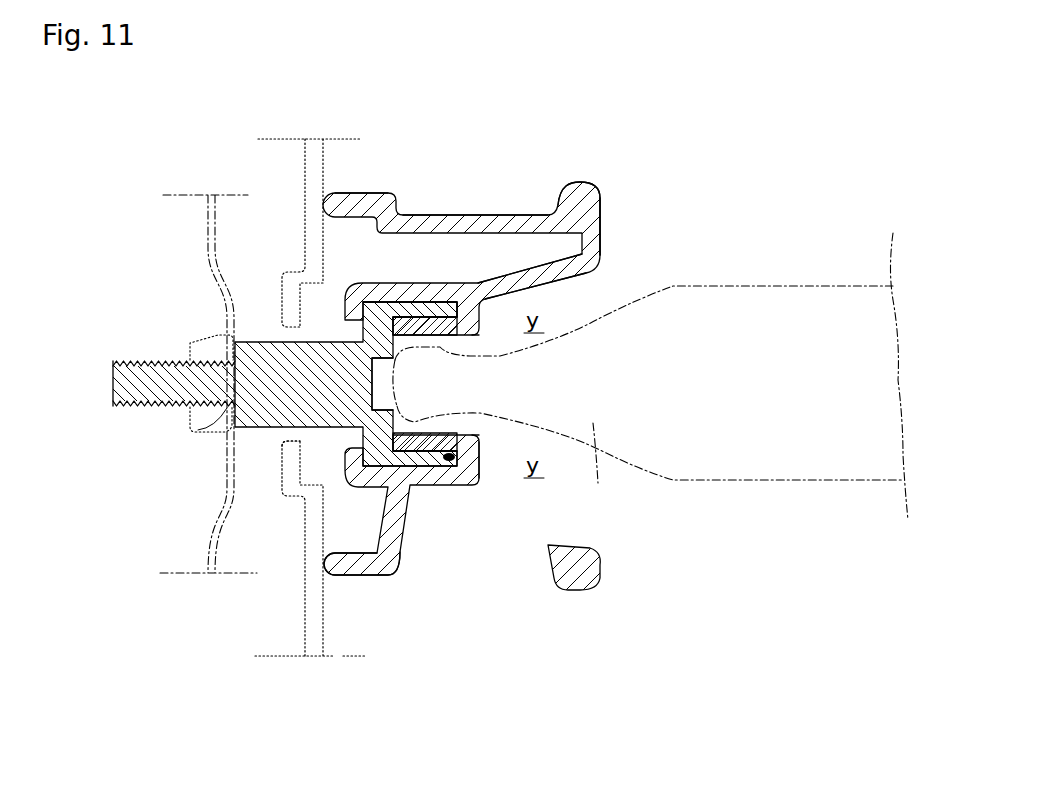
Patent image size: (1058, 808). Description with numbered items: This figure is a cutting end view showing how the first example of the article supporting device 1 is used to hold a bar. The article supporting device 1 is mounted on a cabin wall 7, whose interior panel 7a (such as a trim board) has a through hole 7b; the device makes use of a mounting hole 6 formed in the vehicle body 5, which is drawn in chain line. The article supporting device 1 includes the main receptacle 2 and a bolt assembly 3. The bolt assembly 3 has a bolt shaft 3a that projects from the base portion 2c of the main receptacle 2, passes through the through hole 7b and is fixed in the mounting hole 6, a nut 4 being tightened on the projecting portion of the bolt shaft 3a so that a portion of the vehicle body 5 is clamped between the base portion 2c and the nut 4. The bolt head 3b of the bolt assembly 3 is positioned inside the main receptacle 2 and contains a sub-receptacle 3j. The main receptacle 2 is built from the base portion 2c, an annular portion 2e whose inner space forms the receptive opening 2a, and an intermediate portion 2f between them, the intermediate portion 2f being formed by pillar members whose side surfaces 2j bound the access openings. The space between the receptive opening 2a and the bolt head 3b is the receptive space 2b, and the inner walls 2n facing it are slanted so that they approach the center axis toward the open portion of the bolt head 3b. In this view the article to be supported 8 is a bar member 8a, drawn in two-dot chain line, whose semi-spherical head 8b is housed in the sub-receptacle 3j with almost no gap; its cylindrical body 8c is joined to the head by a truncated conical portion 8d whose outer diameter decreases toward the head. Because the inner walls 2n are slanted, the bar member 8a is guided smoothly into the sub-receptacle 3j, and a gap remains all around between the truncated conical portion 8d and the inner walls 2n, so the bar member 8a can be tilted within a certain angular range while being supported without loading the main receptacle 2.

The article supporting device 1 is at (551, 170).
The main receptacle 2 is at (590, 182).
The receptive opening 2a is at (586, 296).
The receptive space 2b is at (562, 400).
The base portion 2c is at (362, 577).
The annular portion 2e is at (579, 218).
The intermediate portion 2f is at (485, 215).
The side surfaces 2j is at (507, 518).
The inner walls 2n is at (553, 284).
The bolt assembly 3 is at (256, 320).
The bolt shaft 3a is at (140, 406).
The bolt head 3b is at (437, 302).
The sub-receptacle 3j is at (432, 398).
The nut 4 is at (190, 343).
The vehicle body 5 is at (210, 517).
The mounting hole 6 is at (200, 430).
The cabin wall 7 is at (334, 429).
The interior panel 7a is at (323, 637).
The through hole 7b is at (282, 441).
The article to be supported 8 is at (678, 411).
The bar member 8a is at (805, 467).
The semi-spherical head 8b is at (427, 468).
The cylindrical body 8c is at (857, 432).
The truncated conical portion 8d is at (598, 483).